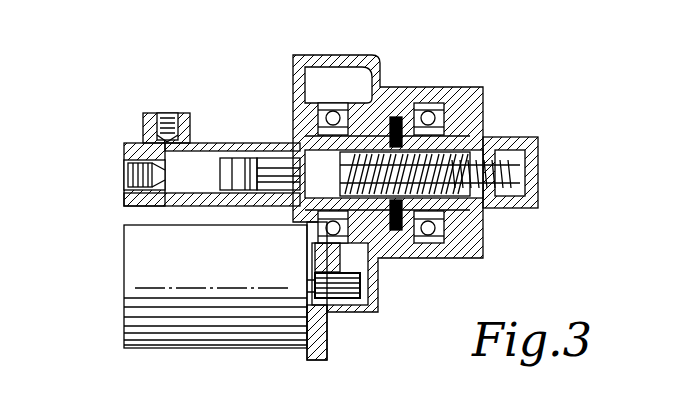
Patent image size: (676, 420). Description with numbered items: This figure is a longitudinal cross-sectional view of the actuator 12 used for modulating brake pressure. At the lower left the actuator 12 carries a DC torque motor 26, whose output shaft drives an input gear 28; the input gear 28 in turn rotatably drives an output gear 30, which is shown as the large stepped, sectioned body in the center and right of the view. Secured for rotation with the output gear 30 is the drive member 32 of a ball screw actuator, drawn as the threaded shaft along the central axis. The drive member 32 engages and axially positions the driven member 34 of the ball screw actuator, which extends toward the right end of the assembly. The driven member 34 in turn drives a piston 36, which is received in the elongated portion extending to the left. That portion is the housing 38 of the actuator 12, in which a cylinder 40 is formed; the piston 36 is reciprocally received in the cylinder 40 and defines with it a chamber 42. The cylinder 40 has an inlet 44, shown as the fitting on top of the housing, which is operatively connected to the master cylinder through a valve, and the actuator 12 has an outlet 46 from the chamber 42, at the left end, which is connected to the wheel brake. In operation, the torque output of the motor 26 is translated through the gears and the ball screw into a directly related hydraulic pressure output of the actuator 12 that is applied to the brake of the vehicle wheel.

The actuator 12 is at (102, 132).
The DC torque motor 26 is at (128, 287).
The input gear 28 is at (353, 300).
The output gear 30 is at (345, 63).
The drive member 32 is at (386, 103).
The driven member 34 is at (484, 195).
The piston 36 is at (258, 156).
The housing 38 is at (206, 160).
The cylinder 40 is at (126, 197).
The chamber 42 is at (220, 160).
The inlet 44 is at (166, 113).
The outlet 46 is at (126, 172).